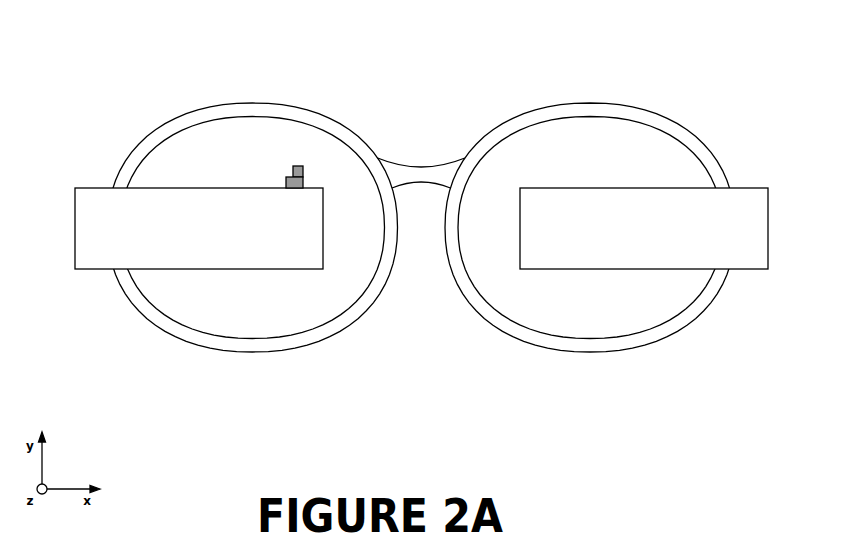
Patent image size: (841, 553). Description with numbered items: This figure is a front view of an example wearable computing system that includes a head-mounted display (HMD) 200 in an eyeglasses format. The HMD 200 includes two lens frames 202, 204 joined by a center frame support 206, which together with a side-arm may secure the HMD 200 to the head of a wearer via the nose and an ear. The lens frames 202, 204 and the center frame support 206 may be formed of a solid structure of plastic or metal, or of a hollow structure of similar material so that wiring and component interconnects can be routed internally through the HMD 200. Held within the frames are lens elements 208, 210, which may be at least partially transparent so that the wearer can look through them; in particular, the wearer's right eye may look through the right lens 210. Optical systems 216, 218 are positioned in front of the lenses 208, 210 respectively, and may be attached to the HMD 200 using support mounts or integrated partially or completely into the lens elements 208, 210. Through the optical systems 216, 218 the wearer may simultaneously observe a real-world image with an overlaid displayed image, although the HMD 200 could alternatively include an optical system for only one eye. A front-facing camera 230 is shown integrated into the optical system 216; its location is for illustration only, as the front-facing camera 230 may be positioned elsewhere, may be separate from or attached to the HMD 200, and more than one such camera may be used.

The head-mounted display 200 is at (424, 358).
The lens frame 202 is at (152, 320).
The lens frame 204 is at (698, 313).
The center frame support 206 is at (447, 163).
The lens element 208 is at (278, 337).
The lens element 210 is at (595, 338).
The optical system 216 is at (162, 188).
The optical system 218 is at (672, 188).
The front-facing camera 230 is at (295, 166).